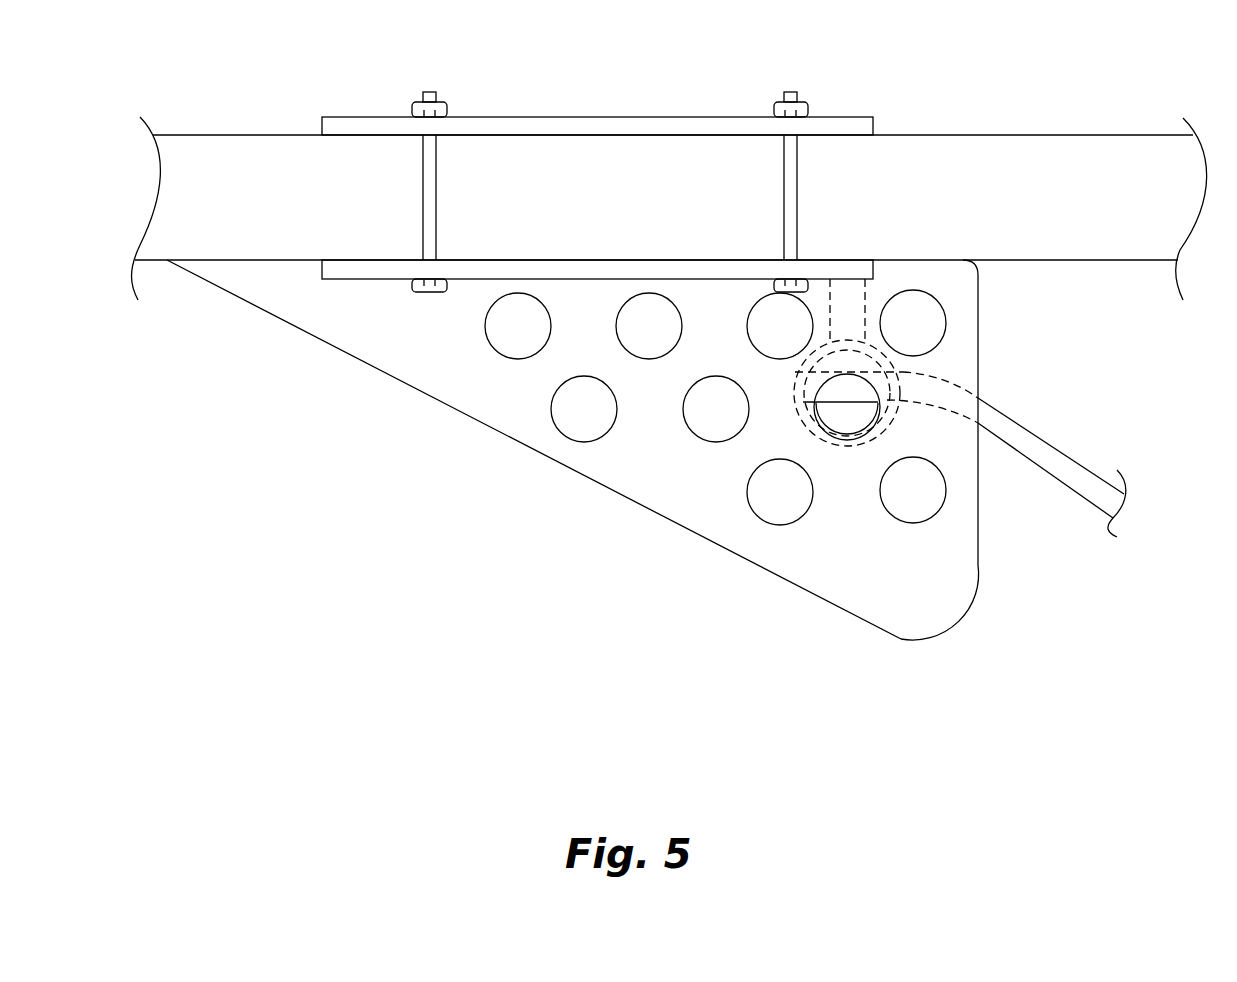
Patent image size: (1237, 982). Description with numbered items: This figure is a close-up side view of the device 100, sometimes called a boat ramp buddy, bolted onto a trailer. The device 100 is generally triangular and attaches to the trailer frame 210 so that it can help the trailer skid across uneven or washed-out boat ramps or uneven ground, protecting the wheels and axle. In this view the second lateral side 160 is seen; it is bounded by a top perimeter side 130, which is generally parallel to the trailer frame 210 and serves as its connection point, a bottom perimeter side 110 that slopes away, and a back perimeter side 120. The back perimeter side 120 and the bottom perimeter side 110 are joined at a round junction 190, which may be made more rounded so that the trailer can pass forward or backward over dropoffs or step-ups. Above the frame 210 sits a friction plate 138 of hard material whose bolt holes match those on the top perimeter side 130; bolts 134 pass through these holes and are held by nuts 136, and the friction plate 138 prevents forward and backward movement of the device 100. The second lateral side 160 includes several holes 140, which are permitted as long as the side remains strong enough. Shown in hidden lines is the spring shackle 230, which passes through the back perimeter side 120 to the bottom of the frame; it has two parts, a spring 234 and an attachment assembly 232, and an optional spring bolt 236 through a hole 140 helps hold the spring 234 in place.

The device 100 is at (520, 555).
The bottom perimeter side 110 is at (502, 438).
The back perimeter side 120 is at (978, 517).
The top perimeter side 130 is at (293, 259).
The bolt 134 is at (797, 208).
The nut 136 is at (810, 110).
The friction plate 138 is at (617, 115).
The hole 140 is at (786, 515).
The second lateral side 160 is at (666, 467).
The round junction 190 is at (957, 620).
The trailer frame 210 is at (993, 160).
The spring shackle 230 is at (865, 440).
The attachment assembly 232 is at (882, 362).
The spring 234 is at (1080, 470).
The spring bolt 236 is at (848, 405).